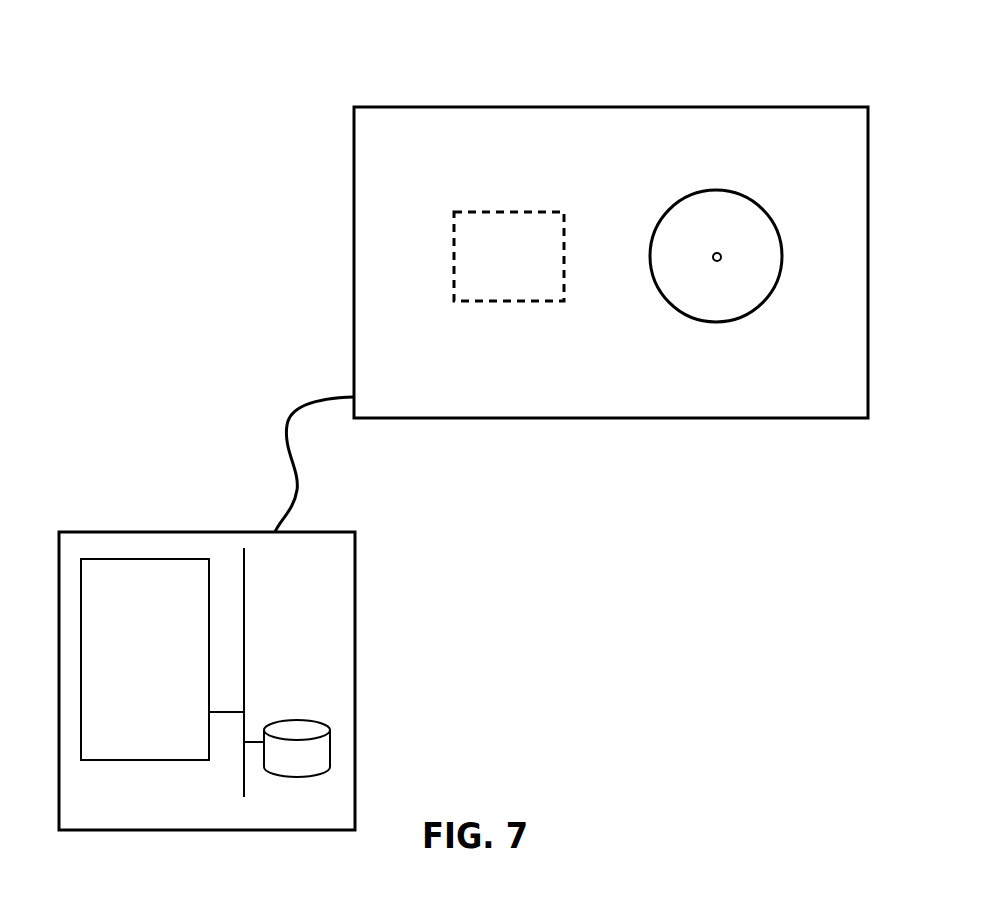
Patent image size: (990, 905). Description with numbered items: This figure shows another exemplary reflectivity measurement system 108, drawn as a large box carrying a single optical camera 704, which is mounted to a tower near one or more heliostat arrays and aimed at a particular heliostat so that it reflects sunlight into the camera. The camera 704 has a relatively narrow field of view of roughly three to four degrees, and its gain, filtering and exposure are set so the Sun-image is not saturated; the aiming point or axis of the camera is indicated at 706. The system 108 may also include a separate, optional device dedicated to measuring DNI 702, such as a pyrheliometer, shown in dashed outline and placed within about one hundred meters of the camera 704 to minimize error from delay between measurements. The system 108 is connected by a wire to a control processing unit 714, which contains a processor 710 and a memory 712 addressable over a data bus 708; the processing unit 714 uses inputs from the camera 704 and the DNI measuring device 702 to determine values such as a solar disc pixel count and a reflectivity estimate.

The reflectivity measurement system 108 is at (367, 188).
The DNI measuring device 702 is at (507, 223).
The optical camera 704 is at (687, 227).
The center point 706 is at (721, 257).
The data bus 708 is at (243, 563).
The processor 710 is at (145, 659).
The memory 712 is at (297, 748).
The control processing unit 714 is at (207, 681).